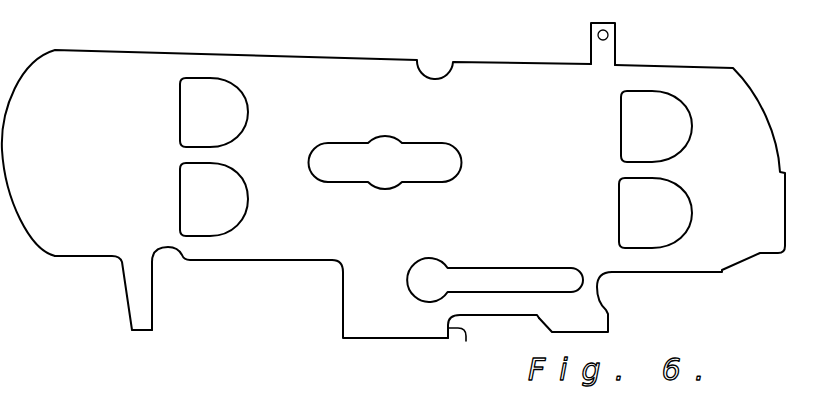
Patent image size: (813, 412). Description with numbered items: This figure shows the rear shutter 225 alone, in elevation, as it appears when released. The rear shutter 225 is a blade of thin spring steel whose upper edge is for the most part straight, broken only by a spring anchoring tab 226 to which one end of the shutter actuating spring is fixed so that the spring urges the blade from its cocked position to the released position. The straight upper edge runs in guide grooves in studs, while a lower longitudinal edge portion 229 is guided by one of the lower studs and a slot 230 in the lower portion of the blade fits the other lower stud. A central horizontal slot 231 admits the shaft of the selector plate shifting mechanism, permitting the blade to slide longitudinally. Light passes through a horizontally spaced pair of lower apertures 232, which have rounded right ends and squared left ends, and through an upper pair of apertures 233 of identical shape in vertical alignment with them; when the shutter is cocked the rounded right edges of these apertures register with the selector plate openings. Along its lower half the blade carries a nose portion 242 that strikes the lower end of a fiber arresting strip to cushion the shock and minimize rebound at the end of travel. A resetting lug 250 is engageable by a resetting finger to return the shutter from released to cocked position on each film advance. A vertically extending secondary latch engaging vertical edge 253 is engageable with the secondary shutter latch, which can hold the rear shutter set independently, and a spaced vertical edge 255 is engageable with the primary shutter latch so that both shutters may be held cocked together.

The rear shutter 225 is at (82, 63).
The spring anchoring tab 226 is at (592, 43).
The lower longitudinal edge portion 229 is at (278, 262).
The slot 230 is at (486, 272).
The central horizontal slot 231 is at (459, 166).
The lower apertures 232 is at (182, 207).
The upper apertures 233 is at (182, 104).
The nose portion 242 is at (782, 226).
The resetting lug 250 is at (135, 317).
The secondary latch engaging vertical edge 253 is at (462, 342).
The vertical edge 255 is at (612, 326).